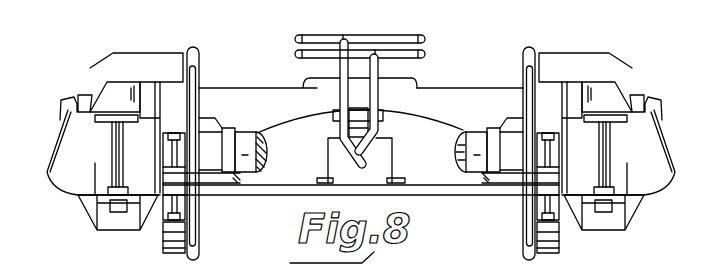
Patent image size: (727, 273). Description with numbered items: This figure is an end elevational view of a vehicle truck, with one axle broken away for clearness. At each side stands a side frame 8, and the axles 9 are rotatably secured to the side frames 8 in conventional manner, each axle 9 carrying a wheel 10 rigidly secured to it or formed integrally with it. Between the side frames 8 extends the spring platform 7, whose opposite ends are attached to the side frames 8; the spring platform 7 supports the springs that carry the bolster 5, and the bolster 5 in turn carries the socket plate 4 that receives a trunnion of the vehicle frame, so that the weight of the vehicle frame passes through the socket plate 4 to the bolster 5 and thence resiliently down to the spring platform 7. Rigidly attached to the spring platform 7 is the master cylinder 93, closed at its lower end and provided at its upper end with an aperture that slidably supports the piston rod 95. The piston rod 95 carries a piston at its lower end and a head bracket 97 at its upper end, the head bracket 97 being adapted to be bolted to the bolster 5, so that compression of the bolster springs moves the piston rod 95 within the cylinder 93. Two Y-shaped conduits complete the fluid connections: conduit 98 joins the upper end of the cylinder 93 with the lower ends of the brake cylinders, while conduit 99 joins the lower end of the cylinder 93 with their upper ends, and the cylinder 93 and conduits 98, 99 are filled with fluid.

The socket plate 4 is at (404, 82).
The bolster 5 is at (464, 90).
The spring platform 7 is at (448, 191).
The side frame 8 is at (143, 62).
The axle 9 is at (249, 138).
The wheel 10 is at (166, 243).
The cylinder 93 is at (378, 166).
The piston rod 95 is at (345, 131).
The head bracket 97 is at (358, 110).
The Y-shaped conduit 98 is at (316, 57).
The Y-shaped conduit 99 is at (328, 36).